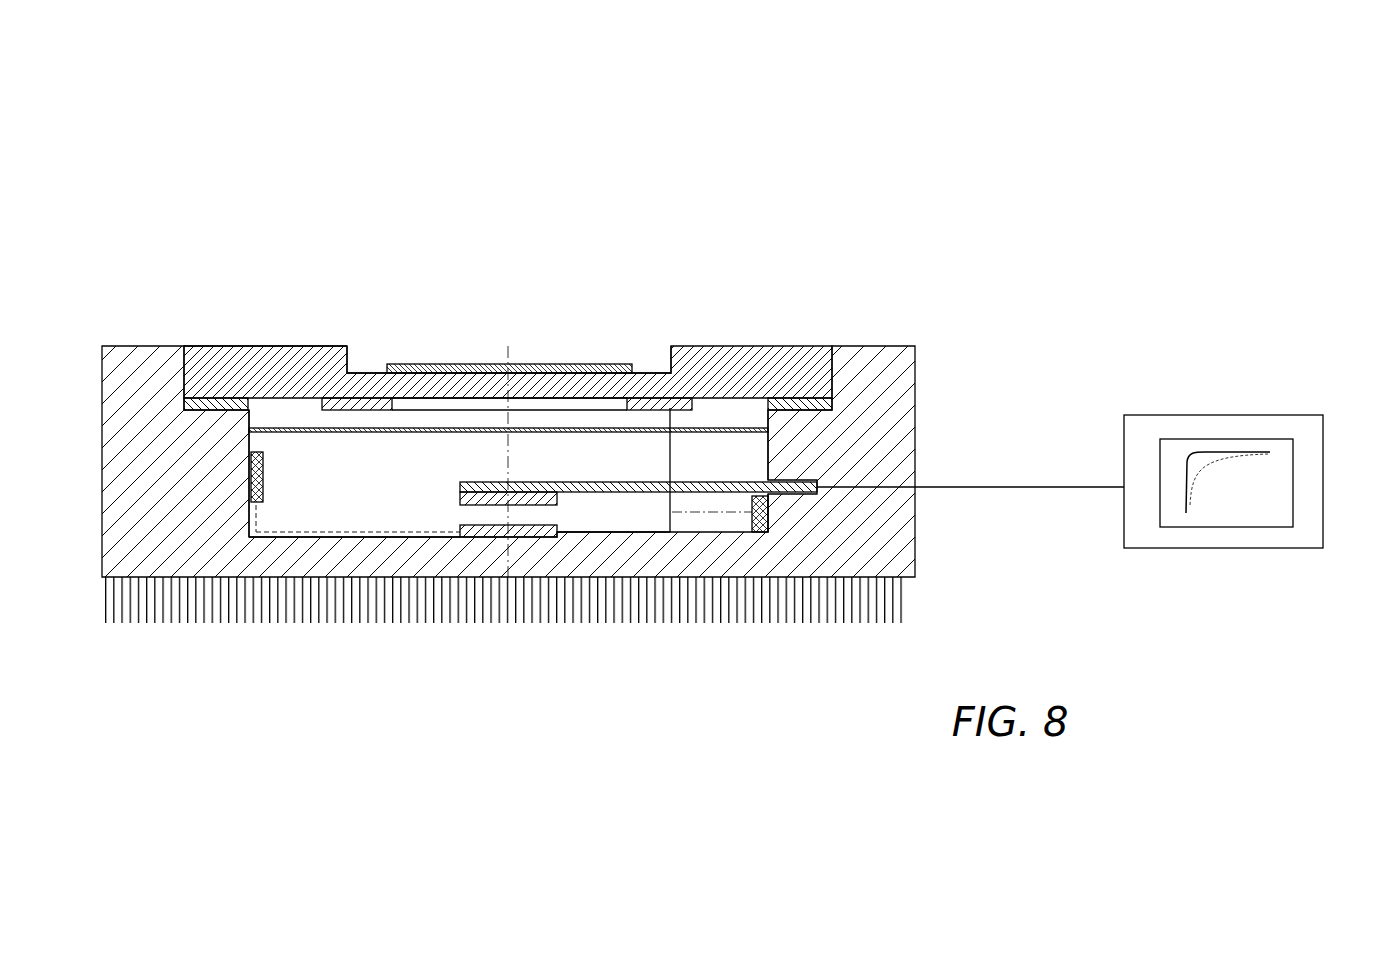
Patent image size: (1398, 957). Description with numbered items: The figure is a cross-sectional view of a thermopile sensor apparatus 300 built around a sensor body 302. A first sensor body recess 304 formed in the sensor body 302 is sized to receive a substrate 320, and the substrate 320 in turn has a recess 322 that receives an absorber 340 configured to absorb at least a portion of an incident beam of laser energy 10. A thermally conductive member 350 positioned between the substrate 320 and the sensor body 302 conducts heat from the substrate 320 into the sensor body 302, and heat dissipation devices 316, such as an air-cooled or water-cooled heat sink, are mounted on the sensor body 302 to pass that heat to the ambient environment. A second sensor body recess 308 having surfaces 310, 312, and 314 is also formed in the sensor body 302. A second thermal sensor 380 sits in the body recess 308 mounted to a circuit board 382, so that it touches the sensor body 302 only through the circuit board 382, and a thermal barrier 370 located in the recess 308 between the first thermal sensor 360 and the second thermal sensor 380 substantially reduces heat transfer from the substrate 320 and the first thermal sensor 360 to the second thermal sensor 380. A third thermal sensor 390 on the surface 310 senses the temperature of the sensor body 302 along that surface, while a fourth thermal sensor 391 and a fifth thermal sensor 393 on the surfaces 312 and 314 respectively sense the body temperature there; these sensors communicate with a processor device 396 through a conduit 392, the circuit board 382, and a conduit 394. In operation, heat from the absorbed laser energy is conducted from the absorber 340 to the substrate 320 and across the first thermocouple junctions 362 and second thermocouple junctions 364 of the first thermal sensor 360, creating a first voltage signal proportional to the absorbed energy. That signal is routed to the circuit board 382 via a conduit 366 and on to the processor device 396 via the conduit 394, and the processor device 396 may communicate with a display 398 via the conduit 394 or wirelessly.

The incident beam of laser energy 10 is at (507, 352).
The thermopile sensor apparatus 300 is at (176, 225).
The sensor body 302 is at (100, 473).
The first sensor body recess 304 is at (200, 362).
The second sensor body recess 308 is at (284, 523).
The surface 310 is at (372, 537).
The surface 312 is at (248, 440).
The surface 314 is at (767, 456).
The heat dissipation device 316 is at (105, 598).
The substrate 320 is at (308, 345).
The recess 322 is at (398, 357).
The absorber 340 is at (460, 365).
The thermally conductive member 350 is at (218, 398).
The first thermal sensor 360 is at (671, 397).
The first thermocouple junctions 362 is at (637, 398).
The second thermocouple junctions 364 is at (683, 398).
The conduit 366 is at (670, 447).
The thermal barrier 370 is at (333, 433).
The second thermal sensor 380 is at (460, 497).
The circuit board 382 is at (472, 483).
The third thermal sensor 390 is at (475, 530).
The fourth thermal sensor 391 is at (248, 478).
The conduit 392 is at (592, 533).
The fifth thermal sensor 393 is at (767, 516).
The conduit 394 is at (1010, 487).
The processor device 396 is at (1225, 415).
The display 398 is at (1293, 482).